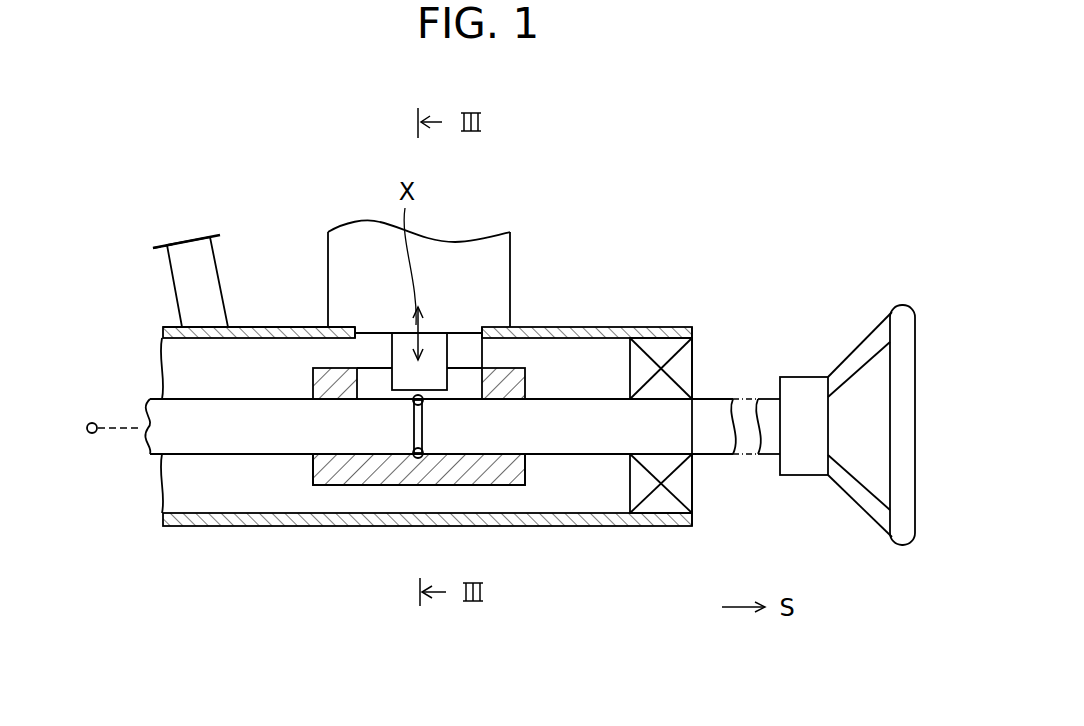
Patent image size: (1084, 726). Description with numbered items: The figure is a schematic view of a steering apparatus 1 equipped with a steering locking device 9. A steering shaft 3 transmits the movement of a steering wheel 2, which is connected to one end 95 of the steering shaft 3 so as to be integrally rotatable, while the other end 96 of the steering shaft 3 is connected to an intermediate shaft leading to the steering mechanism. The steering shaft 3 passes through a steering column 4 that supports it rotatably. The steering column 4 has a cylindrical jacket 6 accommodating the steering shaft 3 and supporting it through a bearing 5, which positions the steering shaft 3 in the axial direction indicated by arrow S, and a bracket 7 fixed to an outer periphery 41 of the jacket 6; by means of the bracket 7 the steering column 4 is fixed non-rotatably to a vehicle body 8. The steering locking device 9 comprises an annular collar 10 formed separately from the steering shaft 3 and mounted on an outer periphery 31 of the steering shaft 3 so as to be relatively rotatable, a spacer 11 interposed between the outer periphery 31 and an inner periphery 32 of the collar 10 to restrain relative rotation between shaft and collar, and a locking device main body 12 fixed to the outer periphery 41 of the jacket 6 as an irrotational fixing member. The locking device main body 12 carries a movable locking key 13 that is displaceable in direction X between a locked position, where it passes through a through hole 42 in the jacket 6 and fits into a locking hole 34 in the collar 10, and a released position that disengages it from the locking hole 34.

The steering apparatus 1 is at (693, 262).
The steering wheel 2 is at (901, 542).
The steering shaft 3 is at (581, 443).
The steering column 4 is at (247, 234).
The bearing 5 is at (653, 505).
The jacket 6 is at (275, 332).
The bracket 7 is at (215, 298).
The vehicle body 8 is at (151, 252).
The steering locking device 9 is at (527, 295).
The collar 10 is at (385, 480).
The spacer 11 is at (413, 404).
The locking device main body 12 is at (470, 268).
The locking key 13 is at (440, 356).
The outer periphery of the steering shaft 31 is at (278, 399).
The inner periphery of the collar 32 is at (323, 400).
The locking hole 34 is at (480, 378).
The outer periphery of the jacket 41 is at (600, 327).
The through hole 42 is at (358, 331).
The one end of the steering shaft 95 is at (772, 443).
The other end of the steering shaft 96 is at (133, 436).